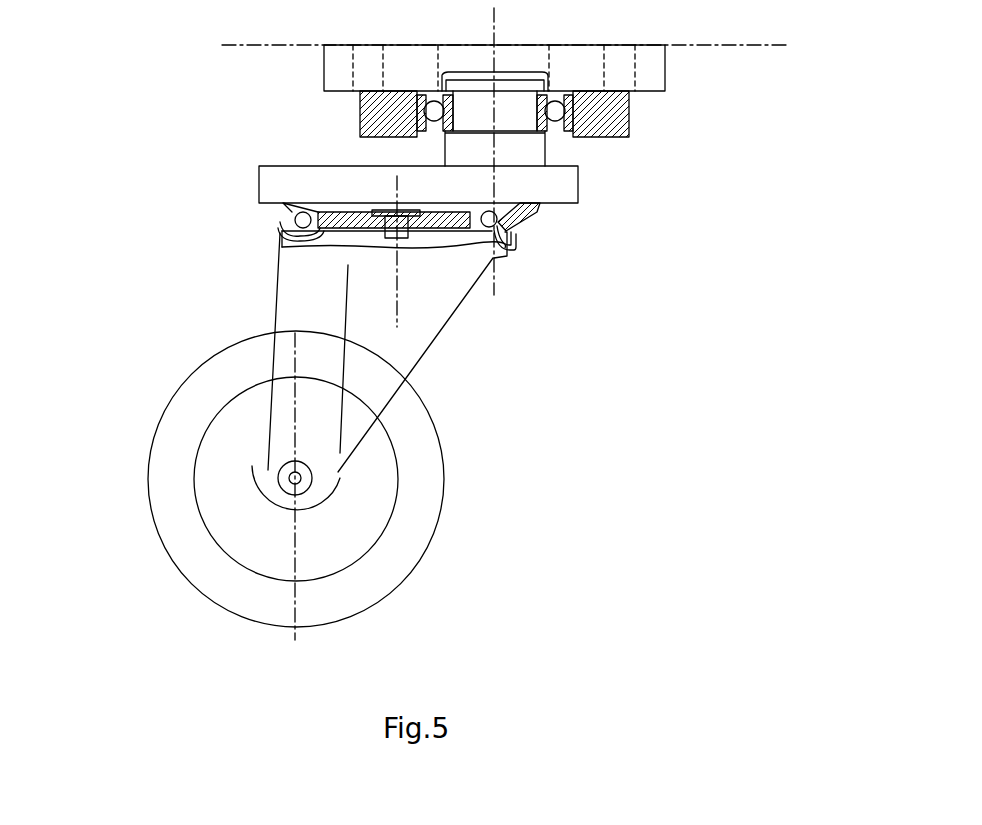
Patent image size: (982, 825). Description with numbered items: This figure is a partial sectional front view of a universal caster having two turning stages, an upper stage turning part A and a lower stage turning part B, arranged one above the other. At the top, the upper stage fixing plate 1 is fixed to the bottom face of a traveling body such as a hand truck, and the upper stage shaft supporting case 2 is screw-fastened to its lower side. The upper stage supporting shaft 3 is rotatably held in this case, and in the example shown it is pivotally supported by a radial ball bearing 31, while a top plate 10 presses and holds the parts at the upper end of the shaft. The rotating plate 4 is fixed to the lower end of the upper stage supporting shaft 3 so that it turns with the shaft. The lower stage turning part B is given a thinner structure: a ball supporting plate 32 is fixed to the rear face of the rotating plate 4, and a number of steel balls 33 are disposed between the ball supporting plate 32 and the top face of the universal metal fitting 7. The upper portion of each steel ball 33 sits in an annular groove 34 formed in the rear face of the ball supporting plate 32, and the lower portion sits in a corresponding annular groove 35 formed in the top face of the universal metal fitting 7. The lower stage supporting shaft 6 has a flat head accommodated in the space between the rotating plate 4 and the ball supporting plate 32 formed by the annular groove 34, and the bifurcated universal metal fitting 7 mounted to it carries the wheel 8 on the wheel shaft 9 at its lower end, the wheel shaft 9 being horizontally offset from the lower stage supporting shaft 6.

The upper stage fixing plate 1 is at (657, 72).
The upper stage shaft supporting case 2 is at (365, 117).
The upper stage supporting shaft 3 is at (528, 152).
The rotating plate 4 is at (280, 187).
The lower stage supporting shaft 6 is at (400, 238).
The universal metal fitting 7 is at (398, 345).
The wheel 8 is at (178, 432).
The wheel shaft 9 is at (290, 478).
The top plate 10 is at (510, 87).
The radial ball bearing 31 is at (632, 110).
The ball supporting plate 32 is at (515, 215).
The steel balls 33 is at (500, 263).
The annular groove 34 is at (310, 212).
The annular groove 35 is at (293, 262).
The upper stage turning part A is at (287, 91).
The lower stage turning part B is at (240, 255).